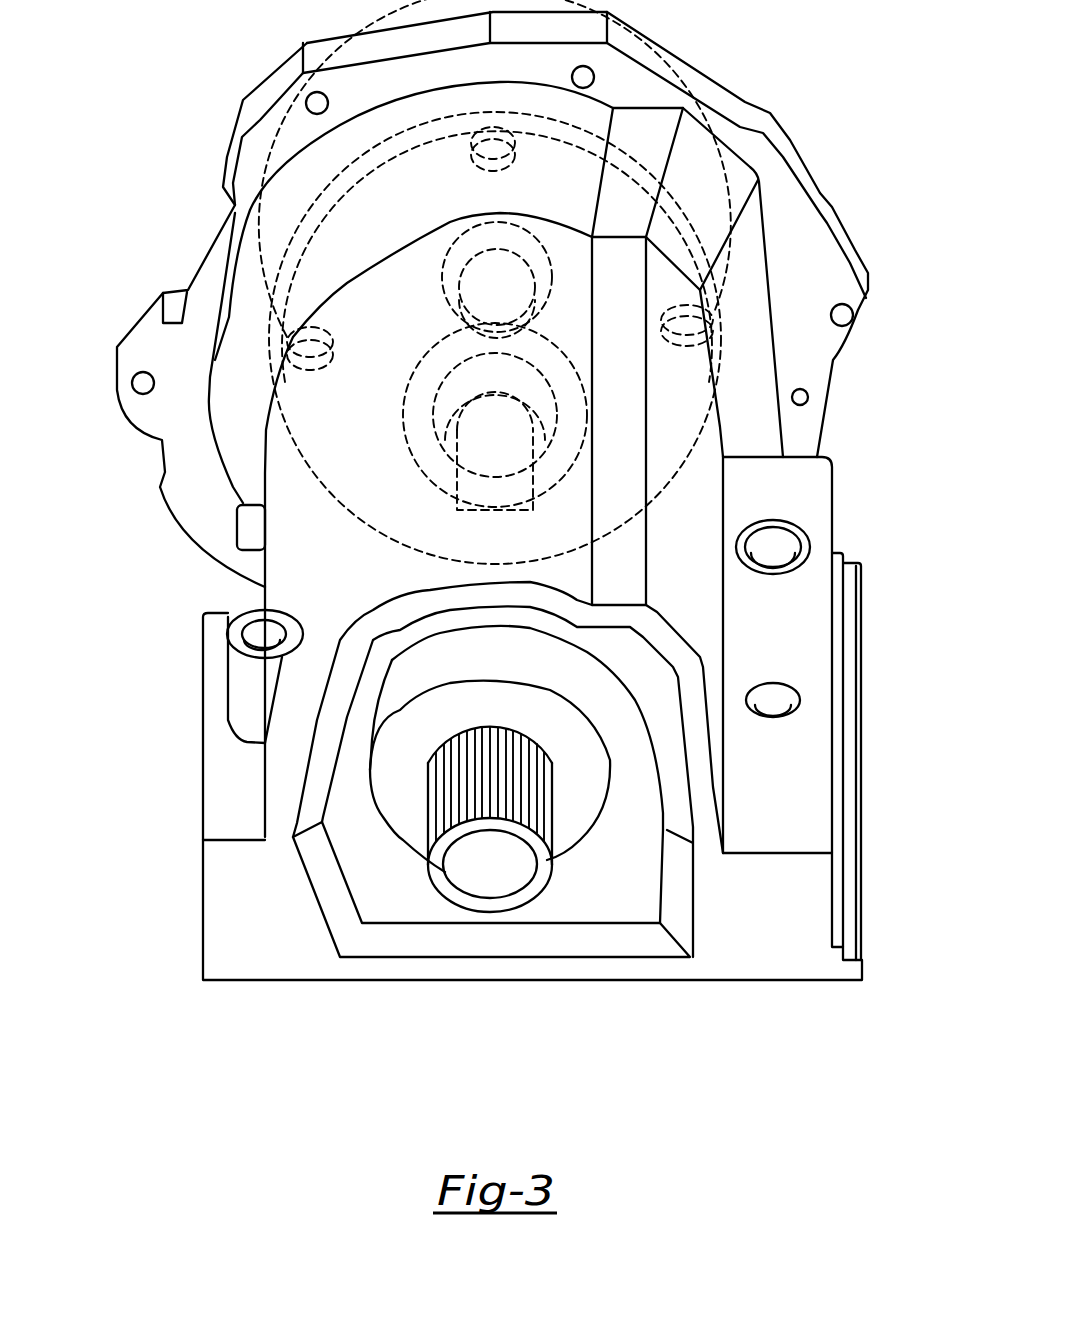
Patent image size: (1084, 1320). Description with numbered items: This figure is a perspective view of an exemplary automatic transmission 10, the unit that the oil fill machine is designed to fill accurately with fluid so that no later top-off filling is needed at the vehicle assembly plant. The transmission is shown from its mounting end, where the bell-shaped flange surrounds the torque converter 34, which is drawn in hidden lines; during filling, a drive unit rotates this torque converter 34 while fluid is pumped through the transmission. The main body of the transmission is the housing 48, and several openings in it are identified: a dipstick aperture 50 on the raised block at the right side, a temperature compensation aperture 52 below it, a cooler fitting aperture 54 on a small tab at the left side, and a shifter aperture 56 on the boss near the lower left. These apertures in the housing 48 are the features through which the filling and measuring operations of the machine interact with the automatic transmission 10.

The automatic transmission 10 is at (144, 116).
The torque converter 34 is at (640, 175).
The housing 48 is at (303, 580).
The dipstick aperture 50 is at (780, 552).
The temperature compensation aperture 52 is at (795, 700).
The cooler fitting aperture 54 is at (237, 527).
The shifter aperture 56 is at (265, 637).